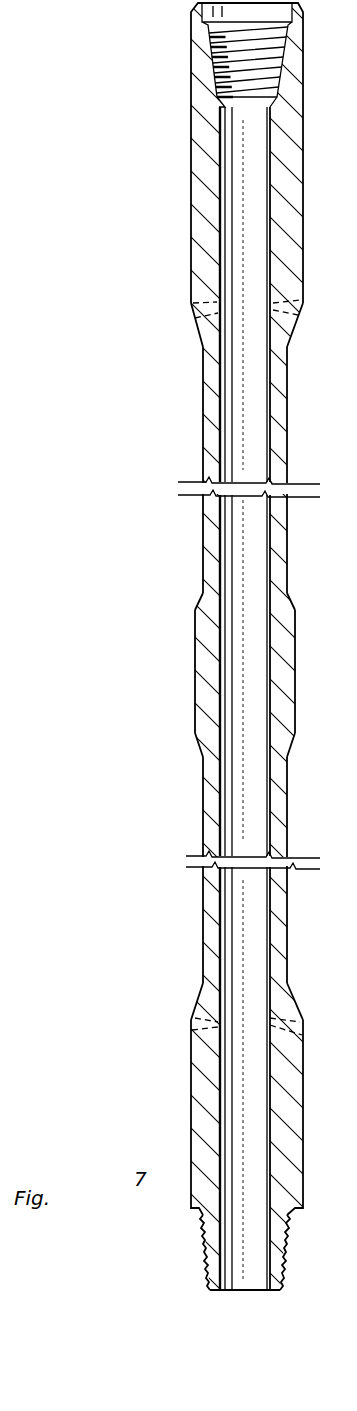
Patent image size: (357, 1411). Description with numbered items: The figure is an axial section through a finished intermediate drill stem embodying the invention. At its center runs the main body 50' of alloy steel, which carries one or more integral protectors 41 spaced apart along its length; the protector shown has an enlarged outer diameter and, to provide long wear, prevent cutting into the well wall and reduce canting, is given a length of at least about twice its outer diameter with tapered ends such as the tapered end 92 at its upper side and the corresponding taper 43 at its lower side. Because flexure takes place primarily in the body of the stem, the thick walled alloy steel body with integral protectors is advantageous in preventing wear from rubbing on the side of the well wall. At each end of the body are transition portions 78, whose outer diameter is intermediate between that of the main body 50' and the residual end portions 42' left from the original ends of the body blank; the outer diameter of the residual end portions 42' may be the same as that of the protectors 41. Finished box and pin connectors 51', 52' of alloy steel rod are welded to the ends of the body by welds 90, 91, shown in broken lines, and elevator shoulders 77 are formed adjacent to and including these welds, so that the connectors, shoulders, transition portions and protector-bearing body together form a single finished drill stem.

The integral protector 41 is at (197, 672).
The residual end portion 42' is at (314, 1001).
The lower tapered transition 43 is at (197, 750).
The main body 50' is at (194, 698).
The box connector 51' is at (205, 153).
The pin connector 52' is at (212, 1155).
The elevator shoulder 77 is at (196, 332).
The transition portion 78 is at (203, 378).
The weld 90 is at (193, 303).
The weld 91 is at (192, 1030).
The tapered end 92 is at (200, 598).